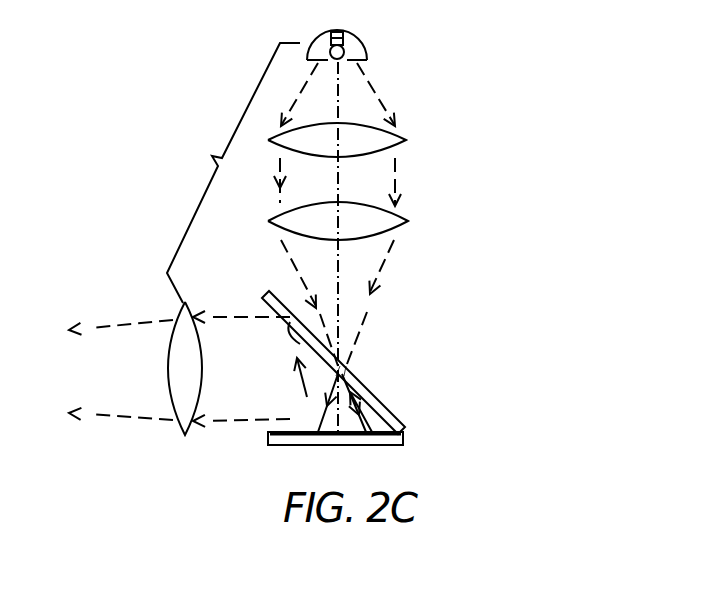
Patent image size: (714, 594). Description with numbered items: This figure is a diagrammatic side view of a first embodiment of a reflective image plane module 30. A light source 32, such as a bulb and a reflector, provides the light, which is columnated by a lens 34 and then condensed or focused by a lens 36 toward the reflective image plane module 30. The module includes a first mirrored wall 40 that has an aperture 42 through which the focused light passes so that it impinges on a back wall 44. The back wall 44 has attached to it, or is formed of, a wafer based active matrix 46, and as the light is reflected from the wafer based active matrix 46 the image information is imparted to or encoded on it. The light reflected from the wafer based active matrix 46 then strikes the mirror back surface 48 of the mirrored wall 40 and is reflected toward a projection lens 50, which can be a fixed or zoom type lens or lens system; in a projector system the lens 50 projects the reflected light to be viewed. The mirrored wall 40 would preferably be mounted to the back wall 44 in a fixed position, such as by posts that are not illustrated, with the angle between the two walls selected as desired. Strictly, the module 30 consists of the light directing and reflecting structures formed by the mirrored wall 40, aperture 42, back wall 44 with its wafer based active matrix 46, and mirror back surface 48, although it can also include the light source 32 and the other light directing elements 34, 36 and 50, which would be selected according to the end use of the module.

The reflective image plane module 30 is at (425, 312).
The light source 32 is at (362, 58).
The lens 34 is at (405, 139).
The lens 36 is at (405, 221).
The first mirrored wall 40 is at (391, 412).
The aperture 42 is at (346, 371).
The back wall 44 is at (388, 440).
The wafer based active matrix 46 is at (266, 433).
The mirror back surface 48 is at (296, 345).
The projection lens 50 is at (182, 311).